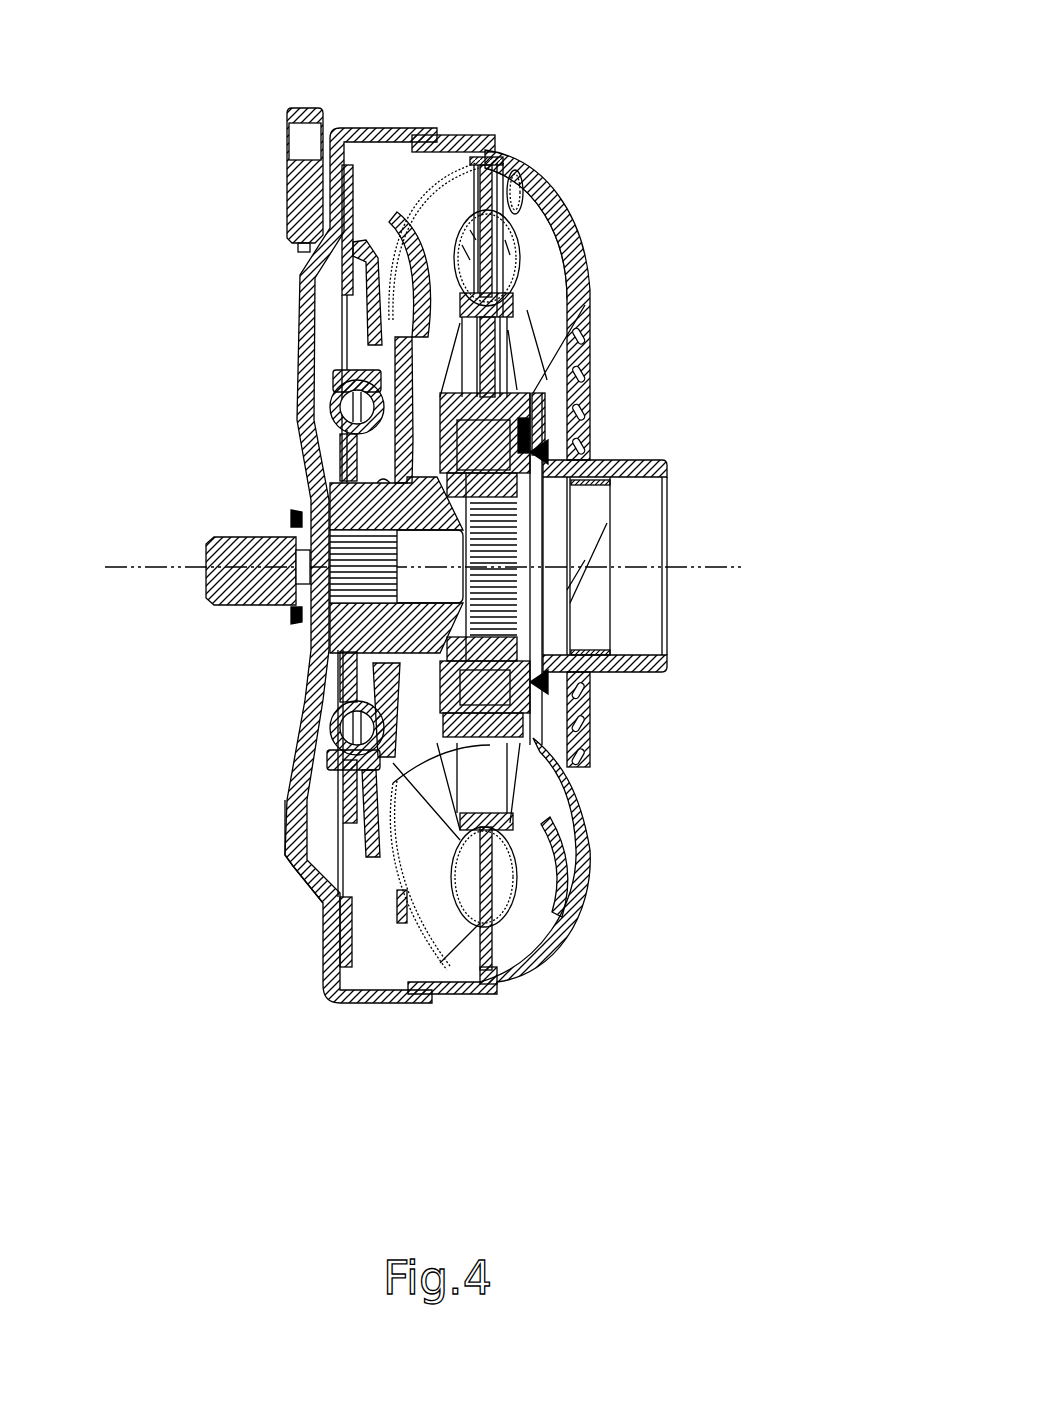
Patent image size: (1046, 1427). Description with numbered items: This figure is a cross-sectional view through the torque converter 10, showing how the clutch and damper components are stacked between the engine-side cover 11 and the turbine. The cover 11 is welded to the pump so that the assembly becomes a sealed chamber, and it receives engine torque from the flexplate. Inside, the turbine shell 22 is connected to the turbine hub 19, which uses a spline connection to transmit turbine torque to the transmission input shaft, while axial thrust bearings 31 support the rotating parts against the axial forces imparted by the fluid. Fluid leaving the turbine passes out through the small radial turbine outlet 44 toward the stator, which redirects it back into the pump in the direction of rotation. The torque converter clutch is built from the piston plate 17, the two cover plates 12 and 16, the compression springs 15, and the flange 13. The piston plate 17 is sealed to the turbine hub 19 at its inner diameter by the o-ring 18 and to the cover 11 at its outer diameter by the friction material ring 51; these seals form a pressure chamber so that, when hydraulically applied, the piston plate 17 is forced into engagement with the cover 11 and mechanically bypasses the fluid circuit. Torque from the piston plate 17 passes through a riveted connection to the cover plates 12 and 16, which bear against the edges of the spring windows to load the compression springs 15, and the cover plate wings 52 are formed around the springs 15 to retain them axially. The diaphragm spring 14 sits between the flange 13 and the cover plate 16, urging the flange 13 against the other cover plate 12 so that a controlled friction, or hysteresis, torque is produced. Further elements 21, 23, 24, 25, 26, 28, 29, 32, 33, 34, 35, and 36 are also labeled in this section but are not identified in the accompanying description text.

The torque converter 10 is at (600, 159).
The cover 11 is at (290, 307).
The cover plate 12 is at (340, 350).
The flange 13 is at (300, 862).
The diaphragm spring 14 is at (343, 458).
The compression springs 15 is at (333, 723).
The cover plate 16 is at (337, 362).
The piston plate 17 is at (338, 250).
The o-ring 18 is at (367, 632).
The turbine hub 19 is at (362, 617).
The cover plate 21 is at (533, 737).
The turbine shell 22 is at (445, 197).
The spring 23 is at (428, 192).
The plate 24 is at (472, 200).
The plate 25 is at (528, 335).
The hub flange 26 is at (490, 693).
The sleeve 28 is at (540, 650).
The spring ring 29 is at (590, 443).
The axial thrust bearings 31 is at (590, 407).
The spring 32 is at (520, 200).
The housing 33 is at (540, 232).
The chamber 34 is at (542, 205).
The hub flange 35 is at (650, 460).
The hub 36 is at (590, 513).
The turbine outlet 44 is at (463, 788).
The friction material ring 51 is at (323, 940).
The cover plate wings 52 is at (330, 810).